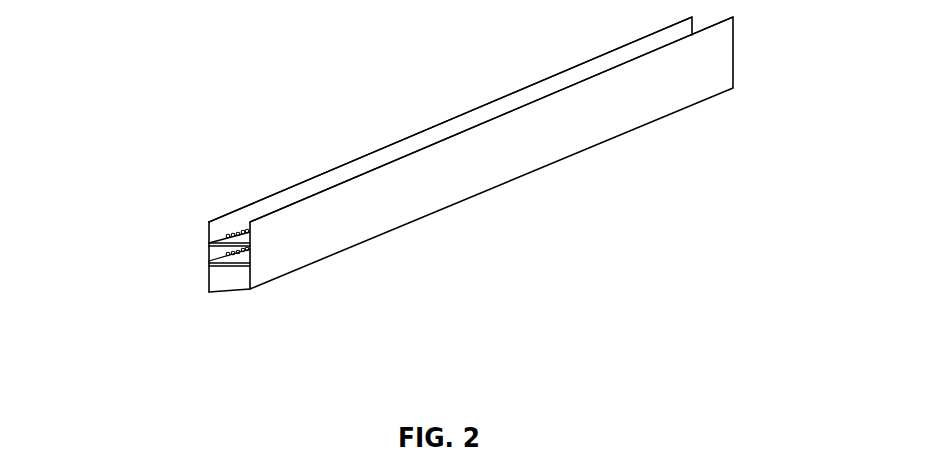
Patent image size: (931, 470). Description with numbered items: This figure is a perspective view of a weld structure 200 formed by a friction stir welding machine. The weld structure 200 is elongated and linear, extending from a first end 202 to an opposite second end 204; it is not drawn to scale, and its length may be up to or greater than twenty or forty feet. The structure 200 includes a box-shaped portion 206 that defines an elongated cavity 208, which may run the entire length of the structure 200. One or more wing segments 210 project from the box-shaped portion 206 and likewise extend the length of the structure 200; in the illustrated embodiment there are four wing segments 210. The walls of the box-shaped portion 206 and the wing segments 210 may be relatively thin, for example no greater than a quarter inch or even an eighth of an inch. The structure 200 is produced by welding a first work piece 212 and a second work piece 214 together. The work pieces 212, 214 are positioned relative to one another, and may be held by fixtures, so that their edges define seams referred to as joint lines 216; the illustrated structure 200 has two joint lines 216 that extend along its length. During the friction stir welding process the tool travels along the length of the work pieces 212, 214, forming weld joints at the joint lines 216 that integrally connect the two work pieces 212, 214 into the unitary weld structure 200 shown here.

The weld structure 200 is at (246, 136).
The first end 202 is at (178, 258).
The second end 204 is at (760, 43).
The box-shaped portion 206 is at (233, 266).
The elongated cavity 208 is at (210, 249).
The wing segments 210 is at (208, 230).
The first work piece 212 is at (345, 162).
The second work piece 214 is at (375, 185).
The joint lines 216 is at (237, 233).